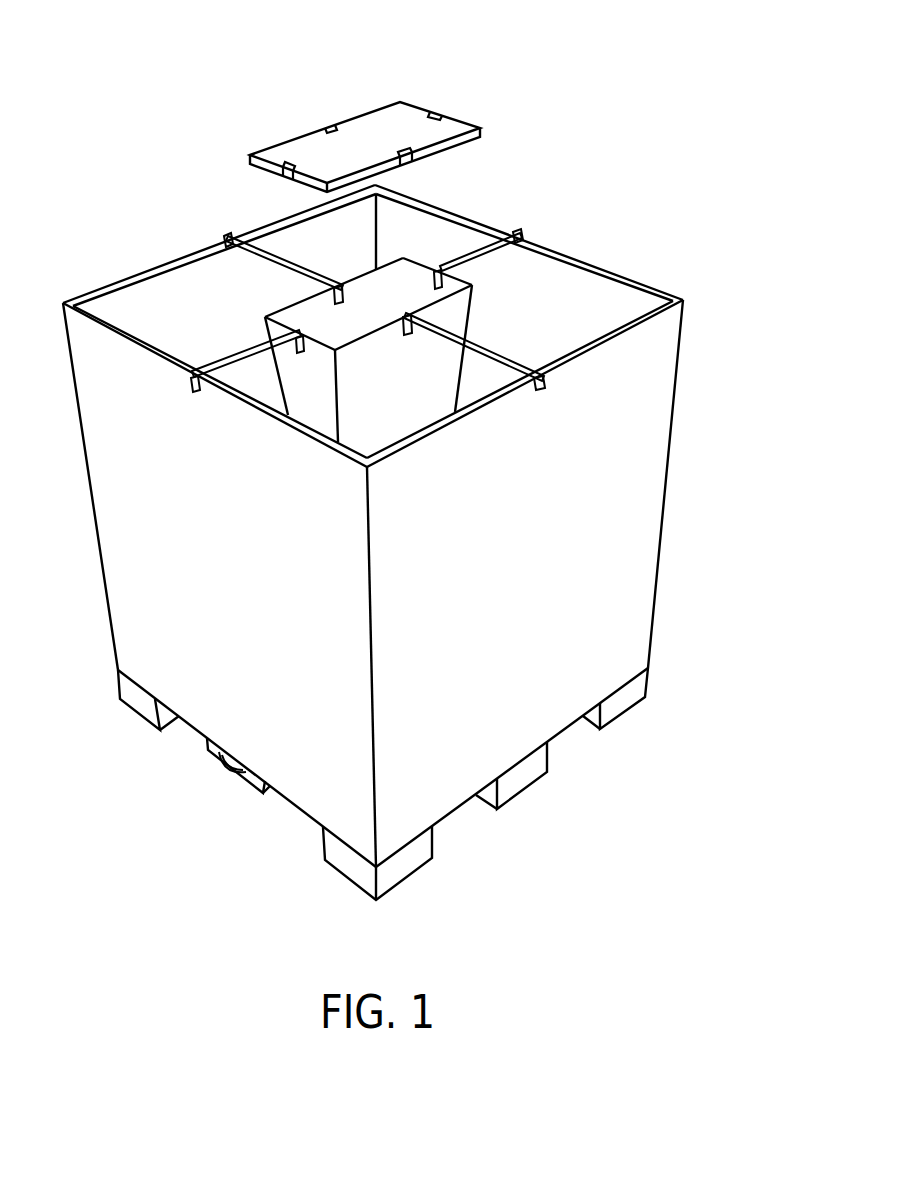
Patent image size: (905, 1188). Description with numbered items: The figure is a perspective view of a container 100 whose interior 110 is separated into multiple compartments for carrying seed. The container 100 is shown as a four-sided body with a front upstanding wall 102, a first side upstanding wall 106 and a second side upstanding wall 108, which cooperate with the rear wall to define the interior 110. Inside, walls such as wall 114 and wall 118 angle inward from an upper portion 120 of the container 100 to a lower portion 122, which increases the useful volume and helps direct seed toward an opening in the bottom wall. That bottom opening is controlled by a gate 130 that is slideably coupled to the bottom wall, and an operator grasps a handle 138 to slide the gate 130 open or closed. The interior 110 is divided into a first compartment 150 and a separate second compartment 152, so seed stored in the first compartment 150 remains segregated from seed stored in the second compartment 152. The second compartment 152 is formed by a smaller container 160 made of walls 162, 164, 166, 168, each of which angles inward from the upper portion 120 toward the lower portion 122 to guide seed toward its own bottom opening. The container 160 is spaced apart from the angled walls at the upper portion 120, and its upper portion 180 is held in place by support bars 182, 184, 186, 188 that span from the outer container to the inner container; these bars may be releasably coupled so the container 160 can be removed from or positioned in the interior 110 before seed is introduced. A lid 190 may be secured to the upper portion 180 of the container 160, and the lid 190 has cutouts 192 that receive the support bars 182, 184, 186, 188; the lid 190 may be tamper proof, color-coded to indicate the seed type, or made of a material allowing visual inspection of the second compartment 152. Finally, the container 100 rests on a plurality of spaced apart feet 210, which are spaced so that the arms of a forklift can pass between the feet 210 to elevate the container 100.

The container 100 is at (644, 148).
The front upstanding wall 102 is at (128, 599).
The first side upstanding wall 106 is at (637, 523).
The second side upstanding wall 108 is at (110, 274).
The interior 110 is at (564, 284).
The wall 114 is at (568, 316).
The wall 118 is at (140, 316).
The upper portion 120 is at (708, 286).
The lower portion 122 is at (685, 656).
The gate 130 is at (260, 797).
The handle 138 is at (222, 768).
The first compartment 150 is at (468, 182).
The second compartment 152 is at (414, 285).
The container 160 is at (480, 304).
The wall 162 is at (287, 391).
The wall 164 is at (450, 291).
The wall 166 is at (370, 366).
The wall 168 is at (353, 316).
The upper portion 180 is at (404, 247).
The support bar 182 is at (243, 343).
The support bar 184 is at (512, 224).
The support bar 186 is at (512, 344).
The support bar 188 is at (249, 234).
The lid 190 is at (403, 85).
The cutout 192 is at (284, 164).
The foot 210 is at (130, 719).